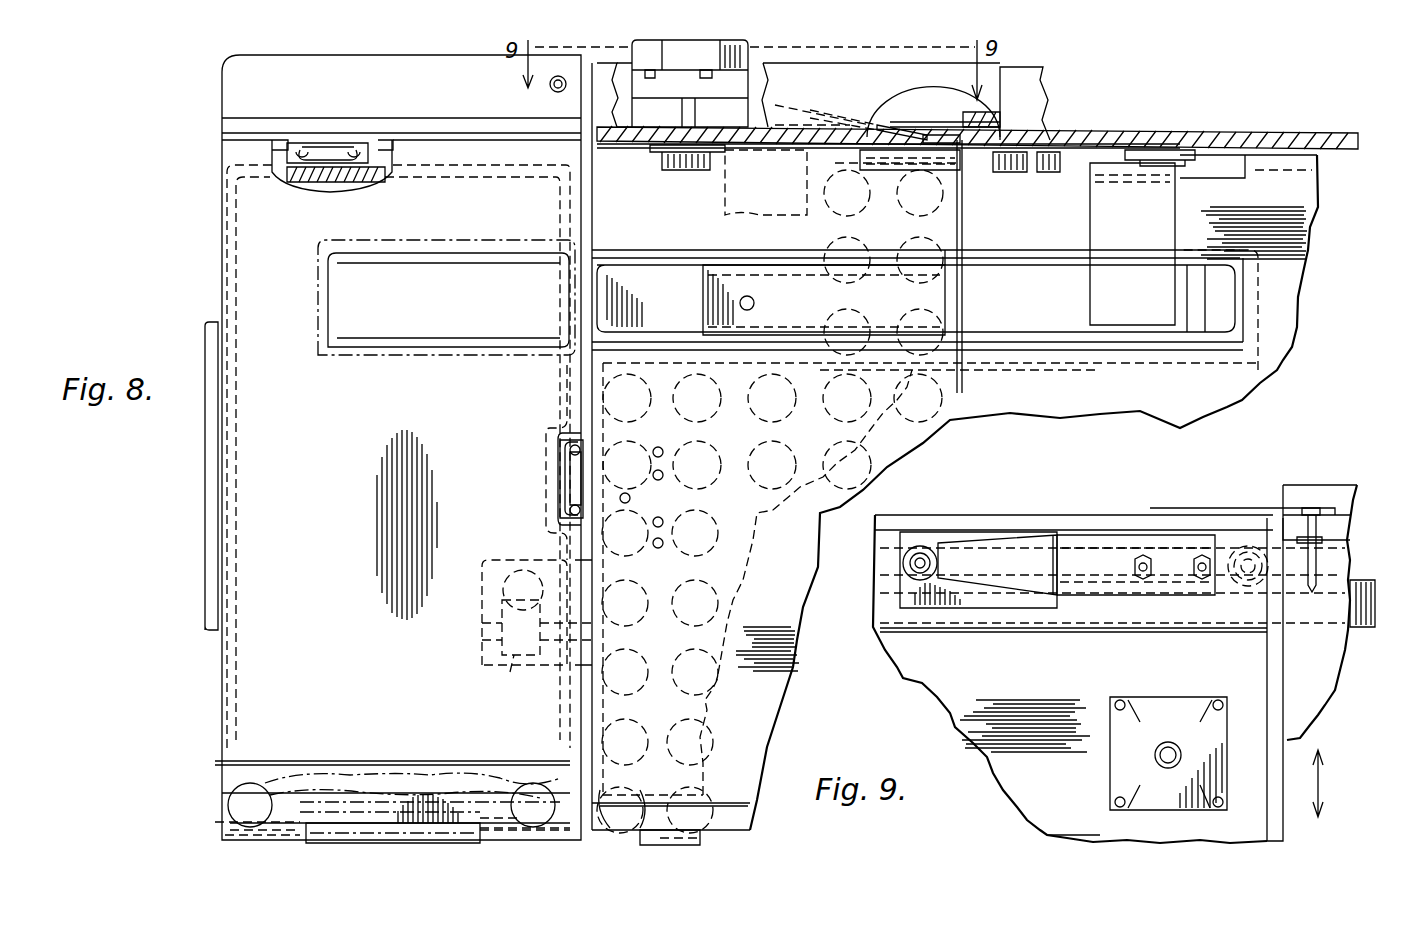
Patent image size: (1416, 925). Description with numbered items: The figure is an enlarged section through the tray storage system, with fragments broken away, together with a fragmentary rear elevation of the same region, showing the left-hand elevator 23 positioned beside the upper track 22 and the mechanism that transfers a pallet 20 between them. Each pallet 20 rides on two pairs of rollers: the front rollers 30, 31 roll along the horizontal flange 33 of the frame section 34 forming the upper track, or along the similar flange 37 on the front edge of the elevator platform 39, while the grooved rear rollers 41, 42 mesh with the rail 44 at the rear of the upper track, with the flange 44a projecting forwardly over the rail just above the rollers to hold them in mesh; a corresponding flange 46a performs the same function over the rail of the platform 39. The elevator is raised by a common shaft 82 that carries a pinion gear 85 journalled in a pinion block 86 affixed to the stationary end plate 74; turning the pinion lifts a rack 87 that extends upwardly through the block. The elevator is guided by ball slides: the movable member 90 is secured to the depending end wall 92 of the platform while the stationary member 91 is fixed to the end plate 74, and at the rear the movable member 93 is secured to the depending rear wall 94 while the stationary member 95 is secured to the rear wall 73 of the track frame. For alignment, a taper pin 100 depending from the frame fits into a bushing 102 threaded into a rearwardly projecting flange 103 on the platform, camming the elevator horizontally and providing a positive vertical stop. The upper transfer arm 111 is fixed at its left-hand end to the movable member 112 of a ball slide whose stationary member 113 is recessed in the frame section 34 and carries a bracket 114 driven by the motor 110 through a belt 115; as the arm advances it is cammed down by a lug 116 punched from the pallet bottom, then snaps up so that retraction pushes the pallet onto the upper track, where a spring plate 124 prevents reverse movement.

In FIG. 8, the tray-carrying pallet 20 is at (520, 770).
In FIG. 8, the upper track 22 is at (1290, 378).
In FIG. 9, the upper track 22 is at (1093, 637).
In FIG. 8, the left-hand elevator 23 is at (217, 230).
In FIG. 9, the left-hand elevator 23 is at (1311, 465).
In FIG. 8, the front roller 30 is at (288, 840).
In FIG. 8, the front roller 31 is at (497, 843).
In FIG. 8, the horizontal flange 33 is at (730, 830).
In FIG. 8, the frame section 34 is at (800, 665).
In FIG. 8, the platform flange 37 is at (415, 828).
In FIG. 8, the elevator platform 39 is at (368, 525).
In FIG. 9, the rear roller 41 is at (1250, 580).
In FIG. 8, the rear roller 42 is at (940, 130).
In FIG. 9, the rear roller 42 is at (928, 545).
In FIG. 8, the rail 44 is at (992, 120).
In FIG. 9, the rail 44 is at (1362, 635).
In FIG. 8, the flange 44a is at (838, 150).
In FIG. 8, the flange 46a is at (482, 160).
In FIG. 8, the rear wall of the track frame 73 is at (385, 140).
In FIG. 9, the rear wall of the track frame 73 is at (1048, 838).
In FIG. 8, the end plate 74 is at (610, 716).
In FIG. 9, the end plate 74 is at (1290, 820).
In FIG. 8, the common shaft 82 is at (612, 630).
In FIG. 8, the pinion gear 85 is at (510, 672).
In FIG. 8, the pinion block 86 is at (480, 660).
In FIG. 8, the rack 87 is at (485, 592).
In FIG. 8, the movable ball-slide member 90 is at (565, 465).
In FIG. 8, the stationary ball-slide member 91 is at (578, 482).
In FIG. 8, the depending end wall 92 is at (565, 393).
In FIG. 8, the movable rear ball-slide member 93 is at (328, 158).
In FIG. 8, the depending rear wall 94 is at (368, 170).
In FIG. 8, the stationary rear ball-slide member 95 is at (316, 150).
In FIG. 9, the taper pin 100 is at (1305, 575).
In FIG. 8, the bushing 102 is at (560, 88).
In FIG. 9, the bushing 102 is at (1378, 472).
In FIG. 9, the rearwardly projecting flange 103 is at (1290, 528).
In FIG. 8, the drive motor 110 is at (735, 80).
In FIG. 9, the drive motor 110 is at (1120, 762).
In FIG. 8, the upper transfer arm 111 is at (880, 290).
In FIG. 8, the movable ball-slide member 112 is at (703, 302).
In FIG. 8, the stationary ball-slide member 113 is at (605, 296).
In FIG. 8, the bracket 114 is at (725, 220).
In FIG. 8, the belt 115 is at (1040, 170).
In FIG. 8, the lug 116 is at (960, 303).
In FIG. 8, the spring plate 124 is at (890, 110).
In FIG. 9, the spring plate 124 is at (992, 540).